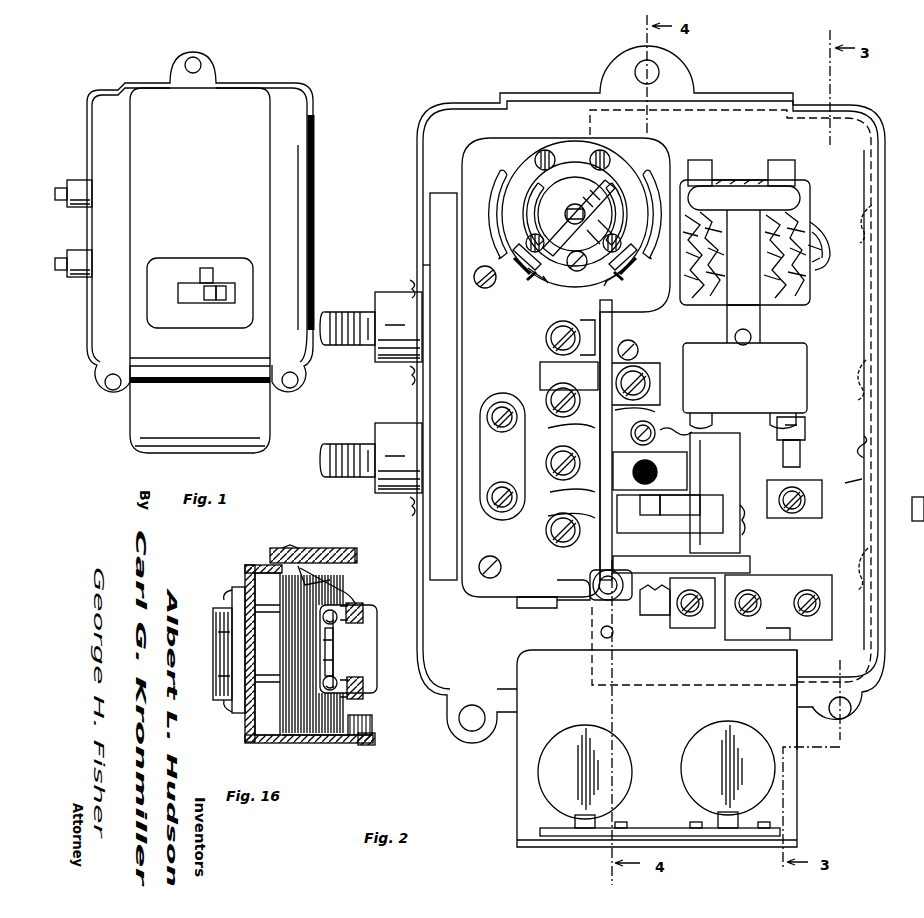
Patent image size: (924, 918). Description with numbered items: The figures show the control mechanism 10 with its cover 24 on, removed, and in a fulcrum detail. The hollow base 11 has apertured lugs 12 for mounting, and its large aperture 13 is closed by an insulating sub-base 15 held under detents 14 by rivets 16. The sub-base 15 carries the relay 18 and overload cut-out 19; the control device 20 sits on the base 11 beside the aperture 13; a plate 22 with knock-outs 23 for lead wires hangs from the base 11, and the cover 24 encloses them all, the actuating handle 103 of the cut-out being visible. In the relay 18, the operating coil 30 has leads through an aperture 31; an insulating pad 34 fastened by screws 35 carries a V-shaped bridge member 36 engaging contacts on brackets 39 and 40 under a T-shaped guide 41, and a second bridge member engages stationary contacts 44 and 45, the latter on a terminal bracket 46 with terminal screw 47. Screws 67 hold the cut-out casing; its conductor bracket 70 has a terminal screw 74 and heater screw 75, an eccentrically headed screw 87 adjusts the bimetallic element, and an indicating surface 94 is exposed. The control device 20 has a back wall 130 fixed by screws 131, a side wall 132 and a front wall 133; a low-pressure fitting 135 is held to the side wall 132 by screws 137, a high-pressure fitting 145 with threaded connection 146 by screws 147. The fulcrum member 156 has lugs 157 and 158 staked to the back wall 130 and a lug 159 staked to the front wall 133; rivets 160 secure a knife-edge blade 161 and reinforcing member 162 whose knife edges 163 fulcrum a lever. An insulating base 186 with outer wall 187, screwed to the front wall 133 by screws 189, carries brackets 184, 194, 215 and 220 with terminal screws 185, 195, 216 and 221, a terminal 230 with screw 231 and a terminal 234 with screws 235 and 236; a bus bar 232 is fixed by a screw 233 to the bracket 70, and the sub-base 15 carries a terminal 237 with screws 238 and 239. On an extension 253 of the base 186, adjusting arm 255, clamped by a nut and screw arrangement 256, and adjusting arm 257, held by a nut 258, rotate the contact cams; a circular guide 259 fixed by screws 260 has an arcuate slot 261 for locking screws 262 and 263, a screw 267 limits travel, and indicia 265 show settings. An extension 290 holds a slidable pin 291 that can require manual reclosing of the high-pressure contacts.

In FIG. 1, the control mechanism 10 is at (330, 85).
In FIG. 2, the hollow base 11 is at (432, 103).
In FIG. 1, the apertured lugs 12 is at (205, 60).
In FIG. 2, the apertured lugs 12 is at (695, 62).
In FIG. 2, the large aperture 13 is at (870, 452).
In FIG. 2, the detents 14 is at (880, 243).
In FIG. 2, the sub-base 15 is at (847, 483).
In FIG. 2, the rivets 16 is at (600, 632).
In FIG. 2, the relay or starter 18 is at (811, 326).
In FIG. 2, the overload cut-out mechanism 19 is at (778, 550).
In FIG. 2, the control device 20 is at (378, 265).
In FIG. 2, the plate 22 is at (517, 772).
In FIG. 2, the knock-outs 23 is at (620, 748).
In FIG. 1, the cover 24 is at (204, 164).
In FIG. 2, the operating coil 30 is at (805, 195).
In FIG. 2, the aperture 31 is at (825, 252).
In FIG. 2, the insulating pad 34 is at (798, 378).
In FIG. 2, the screws 35 is at (700, 418).
In FIG. 2, the V-shaped bridge member 36 is at (805, 283).
In FIG. 2, the bracket 39 is at (702, 160).
In FIG. 2, the bracket 40 is at (785, 160).
In FIG. 2, the T-shaped guide 41 is at (770, 192).
In FIG. 2, the stationary contact 44 is at (692, 432).
In FIG. 2, the stationary contact 45 is at (805, 422).
In FIG. 2, the terminal bracket 46 is at (803, 455).
In FIG. 2, the terminal screw 47 is at (822, 508).
In FIG. 2, the screws 67 is at (645, 420).
In FIG. 2, the conductor bracket 70 is at (742, 572).
In FIG. 2, the terminal screw 74 is at (680, 630).
In FIG. 2, the screw 75 is at (742, 520).
In FIG. 2, the eccentrically headed screw 87 is at (725, 442).
In FIG. 2, the indicating surface 94 is at (686, 470).
In FIG. 1, the actuating handle 103 is at (205, 303).
In FIG. 2, the actuating handle 103 is at (912, 515).
In FIG. 16, the back wall 130 is at (258, 742).
In FIG. 2, the screws 131 is at (625, 345).
In FIG. 16, the side wall 132 is at (245, 578).
In FIG. 16, the front wall 133 is at (270, 555).
In FIG. 2, the fitting 135 is at (385, 363).
In FIG. 2, the screws 137 is at (410, 382).
In FIG. 2, the fitting 145 is at (388, 493).
In FIG. 2, the screw threaded connection 146 is at (368, 480).
In FIG. 2, the screws 147 is at (412, 510).
In FIG. 16, the fulcrum member 156 is at (352, 708).
In FIG. 2, the fulcrum member 156 is at (333, 310).
In FIG. 16, the lug 157 is at (304, 744).
In FIG. 16, the lug 158 is at (358, 744).
In FIG. 16, the lug 159 is at (312, 572).
In FIG. 16, the rivets 160 is at (322, 617).
In FIG. 16, the knife-edge blade 161 is at (325, 645).
In FIG. 16, the reinforcing member 162 is at (377, 648).
In FIG. 16, the knife edges 163 is at (358, 604).
In FIG. 2, the bracket 184 is at (568, 322).
In FIG. 2, the terminal screw 185 is at (545, 338).
In FIG. 2, the base 186 is at (528, 373).
In FIG. 16, the front wall 187 is at (357, 555).
In FIG. 2, the front wall 187 is at (515, 594).
In FIG. 16, the screws 189 is at (290, 545).
In FIG. 2, the screws 189 is at (485, 290).
In FIG. 2, the bracket 194 is at (645, 372).
In FIG. 2, the terminal screw 195 is at (650, 383).
In FIG. 2, the bracket 215 is at (565, 430).
In FIG. 2, the terminal screw 216 is at (550, 392).
In FIG. 2, the bracket 220 is at (565, 517).
In FIG. 2, the terminal screw 221 is at (548, 538).
In FIG. 2, the terminal 230 is at (575, 492).
In FIG. 2, the terminal screw 231 is at (568, 444).
In FIG. 2, the bus bar 232 is at (565, 592).
In FIG. 2, the screw 233 is at (640, 605).
In FIG. 2, the terminal 234 is at (518, 469).
In FIG. 2, the terminal screw 235 is at (498, 402).
In FIG. 2, the terminal screw 236 is at (498, 512).
In FIG. 2, the terminal 237 is at (790, 640).
In FIG. 2, the terminal screw 238 is at (740, 640).
In FIG. 2, the terminal screw 239 is at (822, 612).
In FIG. 2, the extension 253 is at (495, 140).
In FIG. 2, the adjusting arm 255 is at (515, 252).
In FIG. 2, the nut and screw arrangement 256 is at (578, 140).
In FIG. 2, the adjusting arm 257 is at (622, 286).
In FIG. 2, the nut 258 is at (572, 198).
In FIG. 2, the circular guide 259 is at (512, 176).
In FIG. 2, the screws 260 is at (538, 157).
In FIG. 2, the arcuate slot 261 is at (625, 180).
In FIG. 2, the screw 262 is at (526, 243).
In FIG. 2, the screw 263 is at (635, 268).
In FIG. 2, the indicia 265 is at (489, 284).
In FIG. 2, the screw 267 is at (585, 236).
In FIG. 2, the extension 290 is at (598, 595).
In FIG. 2, the pin 291 is at (592, 582).